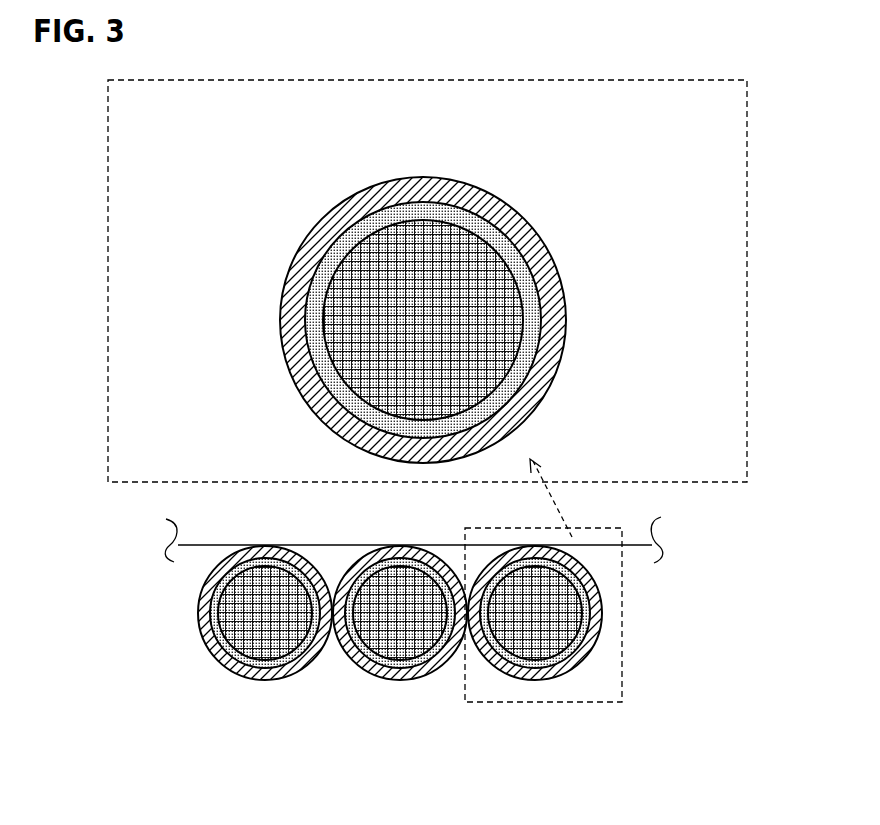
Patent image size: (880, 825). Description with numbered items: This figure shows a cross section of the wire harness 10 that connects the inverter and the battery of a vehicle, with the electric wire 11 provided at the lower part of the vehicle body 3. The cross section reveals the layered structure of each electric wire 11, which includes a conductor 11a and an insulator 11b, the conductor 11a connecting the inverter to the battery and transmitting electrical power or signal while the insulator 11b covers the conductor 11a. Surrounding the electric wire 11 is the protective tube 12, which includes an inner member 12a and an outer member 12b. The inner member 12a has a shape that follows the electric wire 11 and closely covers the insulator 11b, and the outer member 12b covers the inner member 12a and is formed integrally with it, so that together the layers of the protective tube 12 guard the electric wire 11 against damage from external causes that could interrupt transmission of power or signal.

The vehicle body 3 is at (212, 532).
The wire harness 10 is at (622, 677).
The electric wire 11 is at (507, 336).
The conductor 11a is at (657, 204).
The insulator 11b is at (490, 233).
The protective tube 12 is at (381, 280).
The inner member 12a is at (325, 237).
The outer member 12b is at (423, 294).